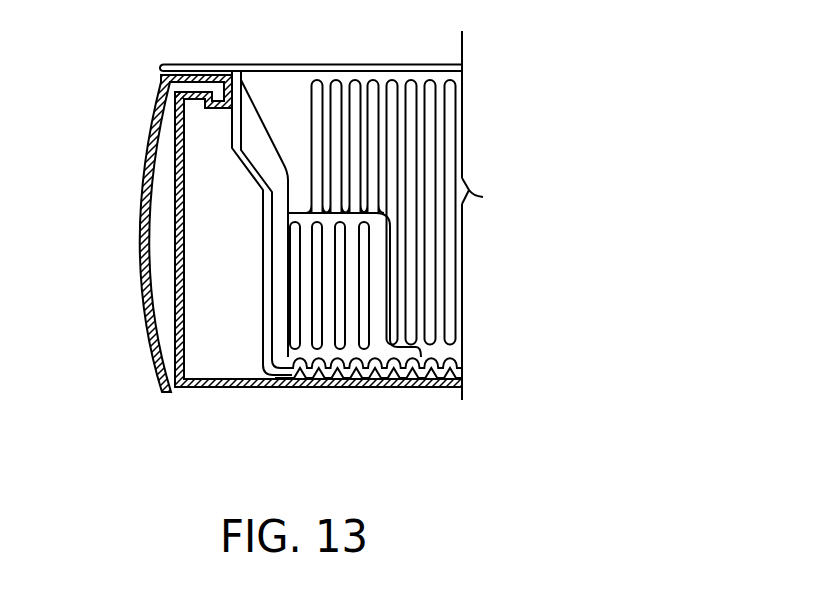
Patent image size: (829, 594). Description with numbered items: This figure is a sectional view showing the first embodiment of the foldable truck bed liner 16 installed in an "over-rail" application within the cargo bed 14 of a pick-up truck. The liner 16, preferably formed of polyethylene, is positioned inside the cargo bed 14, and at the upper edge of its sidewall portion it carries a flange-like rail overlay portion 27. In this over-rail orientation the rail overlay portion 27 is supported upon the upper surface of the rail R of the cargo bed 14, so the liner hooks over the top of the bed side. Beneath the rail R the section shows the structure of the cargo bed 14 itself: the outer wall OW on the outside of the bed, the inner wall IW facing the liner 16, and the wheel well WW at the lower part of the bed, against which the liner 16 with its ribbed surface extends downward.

The cargo bed 14 is at (261, 234).
The foldable truck bed liner 16 is at (367, 55).
The rail overlay portion 27 is at (205, 72).
The rail R is at (155, 73).
The outer wall OW is at (150, 350).
The inner wall IW is at (187, 218).
The wheel well WW is at (253, 387).